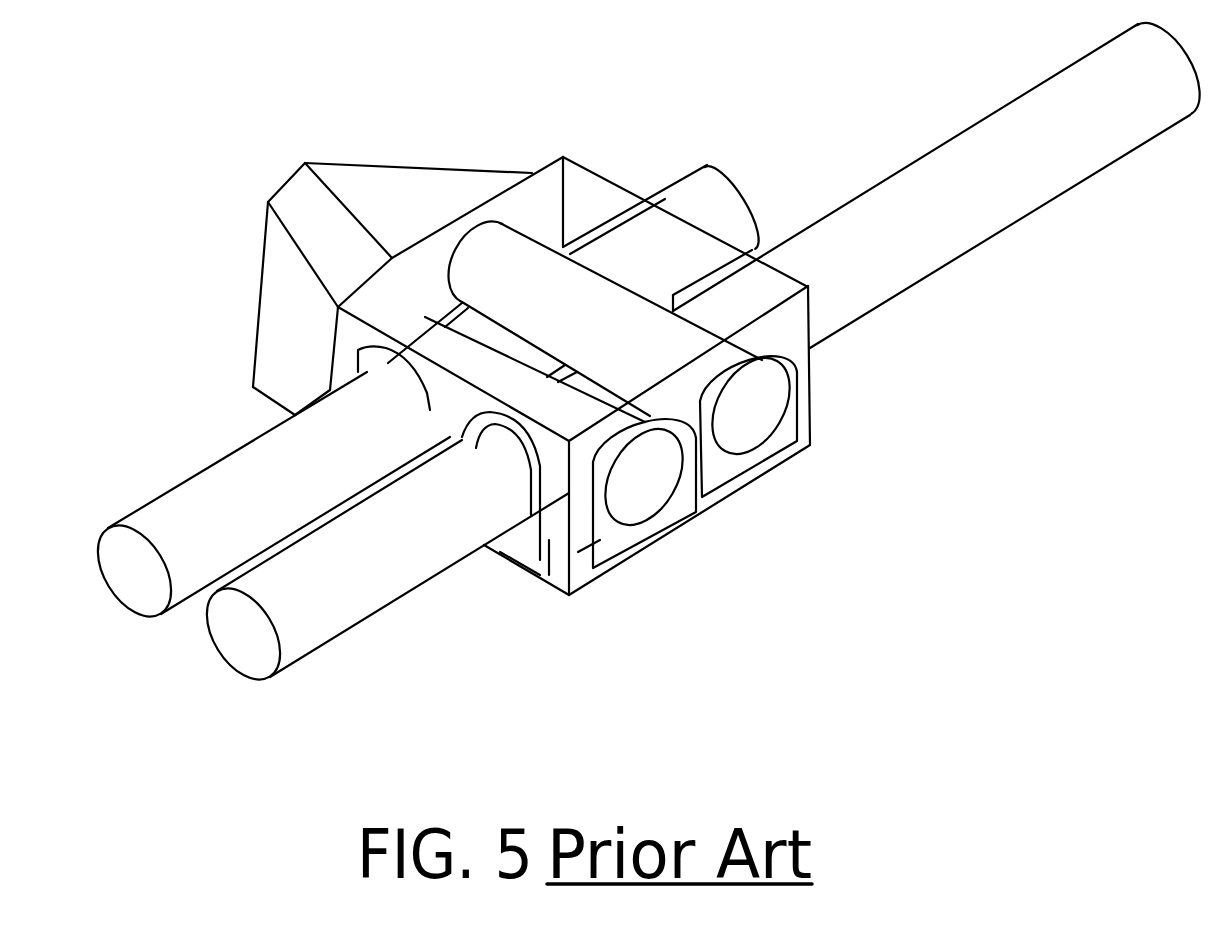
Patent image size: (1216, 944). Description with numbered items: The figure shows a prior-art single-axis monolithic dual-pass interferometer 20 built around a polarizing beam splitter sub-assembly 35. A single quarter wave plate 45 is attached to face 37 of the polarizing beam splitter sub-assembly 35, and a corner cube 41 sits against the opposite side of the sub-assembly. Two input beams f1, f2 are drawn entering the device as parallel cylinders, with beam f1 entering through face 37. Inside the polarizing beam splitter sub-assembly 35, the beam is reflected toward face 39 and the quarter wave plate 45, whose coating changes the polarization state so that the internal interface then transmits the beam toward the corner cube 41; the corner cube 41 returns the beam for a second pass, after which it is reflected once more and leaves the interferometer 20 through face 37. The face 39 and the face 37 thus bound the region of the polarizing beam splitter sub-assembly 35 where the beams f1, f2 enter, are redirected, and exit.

The single-axis monolithic dual-pass interferometer 20 is at (580, 114).
The corner cube 41 is at (298, 206).
The quarter wave plate 45 is at (700, 476).
The polarizing beam splitter sub-assembly 35 is at (518, 547).
The face 37 is at (553, 553).
The face 39 is at (577, 552).
The beam f1 is at (256, 508).
The beam f2 is at (380, 583).